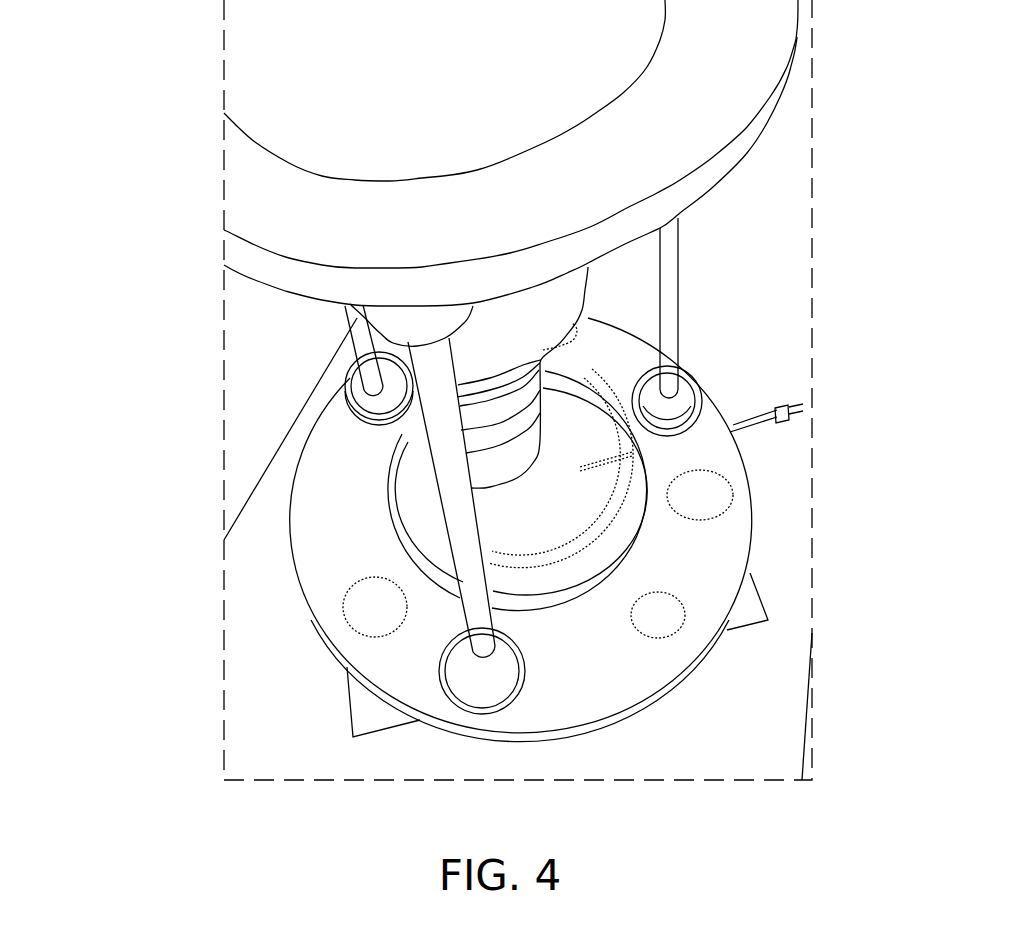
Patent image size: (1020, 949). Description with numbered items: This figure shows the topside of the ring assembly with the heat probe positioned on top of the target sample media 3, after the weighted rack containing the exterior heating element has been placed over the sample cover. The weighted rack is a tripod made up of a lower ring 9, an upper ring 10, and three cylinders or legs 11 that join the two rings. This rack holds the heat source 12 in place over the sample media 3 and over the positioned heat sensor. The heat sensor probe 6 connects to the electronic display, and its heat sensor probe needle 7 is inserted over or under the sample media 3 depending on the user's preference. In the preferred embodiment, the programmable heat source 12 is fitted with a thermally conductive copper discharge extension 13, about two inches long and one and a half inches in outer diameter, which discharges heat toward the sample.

The sample media 3 is at (583, 513).
The heat sensor probe 6 is at (800, 410).
The heat sensor probe needle 7 is at (580, 465).
The lower ring 9 is at (350, 483).
The upper ring 10 is at (400, 214).
The cylinders or legs 11 is at (673, 295).
The heat source 12 is at (520, 353).
The thermally conductive copper discharge extension 13 is at (497, 436).